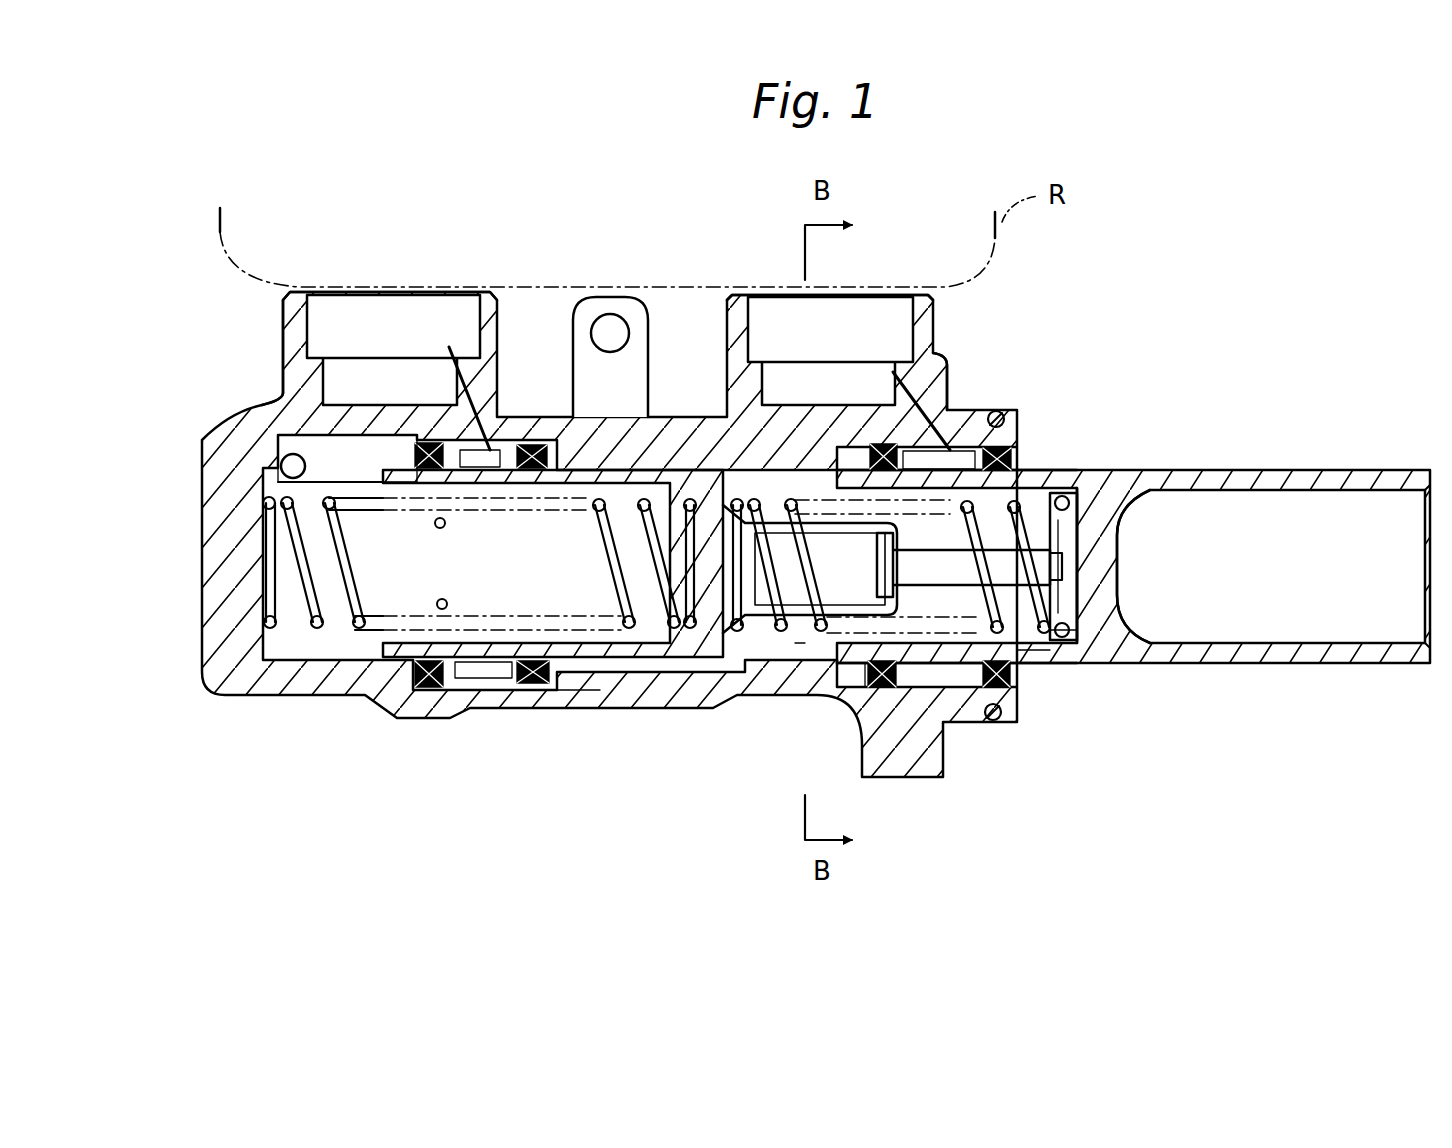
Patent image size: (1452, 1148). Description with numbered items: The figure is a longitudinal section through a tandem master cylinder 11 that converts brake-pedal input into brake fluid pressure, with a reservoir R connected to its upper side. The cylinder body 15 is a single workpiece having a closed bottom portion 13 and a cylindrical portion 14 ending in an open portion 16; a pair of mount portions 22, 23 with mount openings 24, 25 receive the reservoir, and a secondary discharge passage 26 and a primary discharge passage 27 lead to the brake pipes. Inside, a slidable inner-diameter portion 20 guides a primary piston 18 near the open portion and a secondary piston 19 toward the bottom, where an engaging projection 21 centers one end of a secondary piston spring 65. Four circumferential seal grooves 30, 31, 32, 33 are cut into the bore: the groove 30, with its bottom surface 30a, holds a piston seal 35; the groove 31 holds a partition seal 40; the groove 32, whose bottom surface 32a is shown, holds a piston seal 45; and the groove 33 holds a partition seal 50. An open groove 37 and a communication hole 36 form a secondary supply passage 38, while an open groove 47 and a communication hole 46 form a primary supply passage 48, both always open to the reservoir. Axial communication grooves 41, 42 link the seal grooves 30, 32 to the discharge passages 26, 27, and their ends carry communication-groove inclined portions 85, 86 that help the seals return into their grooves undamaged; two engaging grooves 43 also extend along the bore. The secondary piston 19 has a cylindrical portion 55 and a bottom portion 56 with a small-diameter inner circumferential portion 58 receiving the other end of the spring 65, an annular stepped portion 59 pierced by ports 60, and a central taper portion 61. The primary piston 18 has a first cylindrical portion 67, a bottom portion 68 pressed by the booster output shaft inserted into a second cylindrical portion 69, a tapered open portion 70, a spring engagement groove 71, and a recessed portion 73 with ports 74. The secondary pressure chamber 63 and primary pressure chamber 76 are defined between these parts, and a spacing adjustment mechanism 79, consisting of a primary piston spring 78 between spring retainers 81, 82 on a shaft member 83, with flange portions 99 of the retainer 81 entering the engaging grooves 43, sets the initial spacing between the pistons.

The master cylinder 11 is at (1180, 252).
The bottom portion 13 is at (220, 585).
The cylindrical portion 14 is at (587, 700).
The cylinder body 15 is at (977, 728).
The open portion 16 is at (1030, 663).
The primary piston 18 is at (1163, 672).
The secondary piston 19 is at (480, 673).
The slidable inner-diameter portion 20 is at (760, 687).
The engaging projection 21 is at (300, 562).
The mount portion 22 is at (288, 300).
The mount portion 23 is at (937, 313).
The mount opening 24 is at (303, 437).
The mount opening 25 is at (767, 362).
The secondary discharge passage 26 is at (270, 460).
The primary discharge passage 27 is at (578, 475).
The circumferential seal groove 30 is at (410, 690).
The supply chamber 30a is at (433, 443).
The circumferential seal groove 31 is at (556, 690).
The circumferential seal groove 32 is at (855, 690).
The bottom surface 32a is at (850, 450).
The circumferential seal groove 33 is at (1007, 713).
The piston seal 35 is at (433, 688).
The communication hole 36 is at (432, 447).
The open groove 37 is at (497, 443).
The secondary supply passage 38 is at (449, 347).
The partition seal 40 is at (528, 688).
The communication groove 41 is at (282, 395).
The communication groove 42 is at (707, 440).
The engaging grooves 43 is at (653, 673).
The piston seal 45 is at (877, 690).
The communication hole 46 is at (893, 380).
The open groove 47 is at (958, 447).
The primary supply passage 48 is at (893, 447).
The partition seal 50 is at (1020, 470).
The cylindrical portion 55 is at (615, 665).
The bottom portion 56 is at (705, 555).
The small-diameter inner circumferential portion 58 is at (723, 608).
The annular stepped portion 59 is at (383, 672).
The ports 60 is at (447, 528).
The taper portion 61 is at (750, 645).
The secondary pressure chamber 63 is at (322, 662).
The secondary piston spring 65 is at (260, 690).
The first cylindrical portion 67 is at (940, 777).
The bottom portion 68 is at (1105, 575).
The second cylindrical portion 69 is at (1225, 665).
The tapered open portion 70 is at (1070, 468).
The annular spring engagement groove 71 is at (1075, 505).
The recessed portion 73 is at (950, 410).
The ports 74 is at (905, 600).
The primary pressure chamber 76 is at (800, 643).
The primary piston spring 78 is at (1052, 493).
The spacing adjustment mechanism 79 is at (1125, 605).
The spring retainer 81 is at (745, 520).
The spring retainer 82 is at (1068, 560).
The shaft member 83 is at (1050, 640).
The communication-groove inclined portion 85 is at (413, 445).
The communication-groove inclined portion 86 is at (875, 452).
The flange portions 99 is at (693, 677).